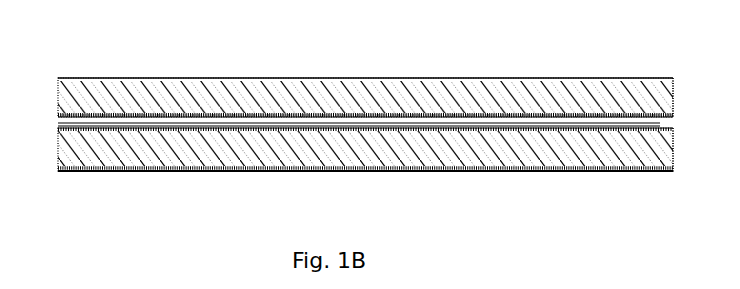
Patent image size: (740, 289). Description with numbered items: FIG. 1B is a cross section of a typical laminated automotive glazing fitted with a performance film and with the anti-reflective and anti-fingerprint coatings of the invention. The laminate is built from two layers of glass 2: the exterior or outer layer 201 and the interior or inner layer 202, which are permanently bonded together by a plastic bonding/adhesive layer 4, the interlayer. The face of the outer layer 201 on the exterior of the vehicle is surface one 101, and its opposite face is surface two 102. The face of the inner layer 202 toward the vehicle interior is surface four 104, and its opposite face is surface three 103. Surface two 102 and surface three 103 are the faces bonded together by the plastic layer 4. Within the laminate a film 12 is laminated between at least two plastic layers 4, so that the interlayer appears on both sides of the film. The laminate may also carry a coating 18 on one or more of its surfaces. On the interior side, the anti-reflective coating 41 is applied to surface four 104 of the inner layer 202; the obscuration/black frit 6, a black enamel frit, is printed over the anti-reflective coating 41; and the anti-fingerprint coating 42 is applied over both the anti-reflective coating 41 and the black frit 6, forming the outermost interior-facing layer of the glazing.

The glass 2 is at (655, 72).
The bonding/adhesive layer 4 is at (152, 110).
The obscuration/black frit 6 is at (467, 178).
The film 12 is at (347, 132).
The coating 18 is at (443, 106).
The anti-reflective coating 41 is at (92, 178).
The anti-fingerprint coating 42 is at (159, 178).
The surface one 101 is at (194, 72).
The surface two 102 is at (327, 106).
The surface three 103 is at (320, 138).
The surface four 104 is at (261, 178).
The outer layer 201 is at (50, 93).
The inner layer 202 is at (50, 142).